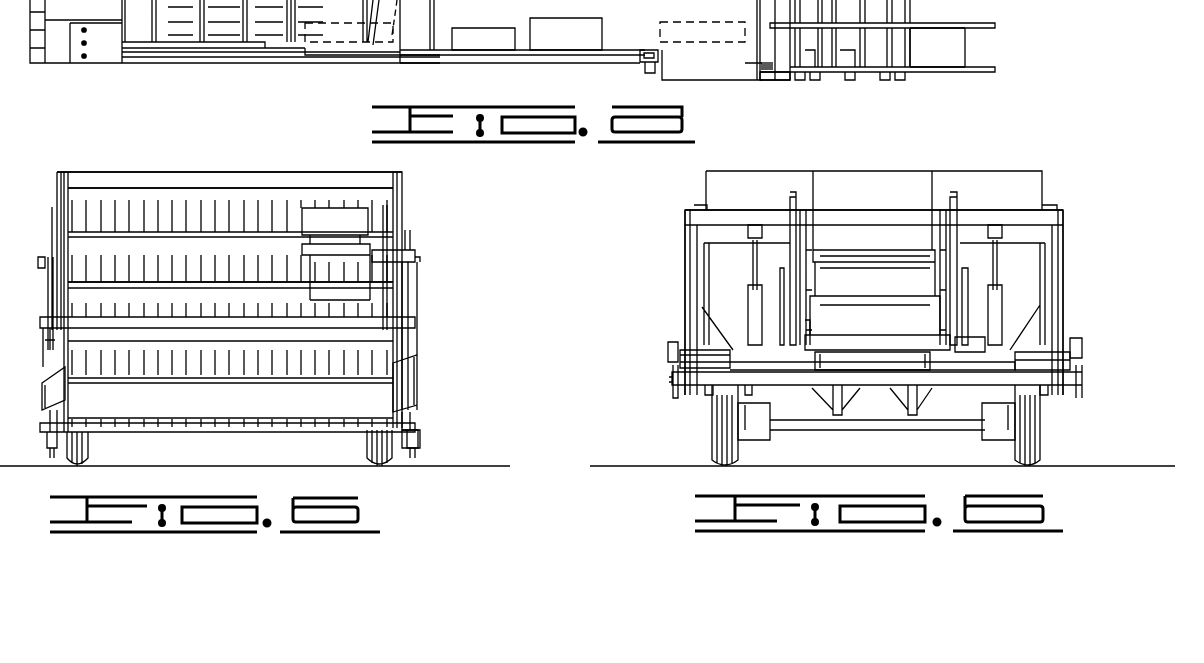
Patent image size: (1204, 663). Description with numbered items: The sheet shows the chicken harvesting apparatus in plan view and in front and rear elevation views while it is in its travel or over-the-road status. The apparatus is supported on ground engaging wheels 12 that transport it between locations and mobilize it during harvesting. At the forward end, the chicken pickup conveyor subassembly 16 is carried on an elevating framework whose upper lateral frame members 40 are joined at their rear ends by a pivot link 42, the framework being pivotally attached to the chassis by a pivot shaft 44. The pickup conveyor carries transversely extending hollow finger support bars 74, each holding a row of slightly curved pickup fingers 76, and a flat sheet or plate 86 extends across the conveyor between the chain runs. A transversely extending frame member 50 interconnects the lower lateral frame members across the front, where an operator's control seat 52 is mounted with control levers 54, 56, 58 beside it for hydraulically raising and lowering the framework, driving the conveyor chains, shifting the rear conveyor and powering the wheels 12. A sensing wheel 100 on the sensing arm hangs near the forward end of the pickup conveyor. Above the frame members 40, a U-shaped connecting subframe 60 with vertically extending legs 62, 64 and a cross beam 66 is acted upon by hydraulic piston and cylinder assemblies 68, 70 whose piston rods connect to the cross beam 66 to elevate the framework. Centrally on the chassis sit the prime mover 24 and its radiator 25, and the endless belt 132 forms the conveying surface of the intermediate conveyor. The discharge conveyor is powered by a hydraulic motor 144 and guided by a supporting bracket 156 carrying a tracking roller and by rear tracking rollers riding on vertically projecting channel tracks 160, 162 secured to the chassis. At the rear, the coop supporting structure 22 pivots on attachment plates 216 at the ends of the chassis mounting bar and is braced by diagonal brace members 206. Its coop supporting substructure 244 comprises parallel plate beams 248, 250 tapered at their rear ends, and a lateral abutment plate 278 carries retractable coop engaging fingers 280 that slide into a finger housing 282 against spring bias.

In FIG. 3, the ground engaging wheels 12 is at (700, 30).
In FIG. 5, the ground engaging wheels 12 is at (80, 450).
In FIG. 6, the ground engaging wheels 12 is at (725, 435).
In FIG. 5, the chicken pickup conveyor subassembly 16 is at (117, 183).
In FIG. 6, the coop supporting structure 22 is at (672, 382).
In FIG. 3, the prime mover 24 is at (580, 43).
In FIG. 3, the radiator 25 is at (492, 47).
In FIG. 3, the upper lateral frame member 40 is at (500, 60).
In FIG. 3, the pivot link 42 is at (658, 62).
In FIG. 3, the pivot shaft 44 is at (645, 73).
In FIG. 5, the transversely extending frame member 50 is at (405, 325).
In FIG. 5, the operator's control seat 52 is at (328, 215).
In FIG. 3, the control lever 54 is at (84, 30).
In FIG. 5, the control lever 54 is at (383, 232).
In FIG. 3, the control lever 56 is at (84, 43).
In FIG. 5, the control lever 56 is at (395, 233).
In FIG. 3, the control lever 58 is at (84, 56).
In FIG. 5, the control lever 58 is at (405, 230).
In FIG. 6, the U-shaped connecting subframe 60 is at (750, 208).
In FIG. 6, the vertically extending leg 62 is at (688, 240).
In FIG. 6, the vertically extending leg 64 is at (1063, 242).
In FIG. 6, the cross beam 66 is at (1033, 216).
In FIG. 6, the hydraulic piston and cylinder assembly 68 is at (752, 295).
In FIG. 6, the hydraulic piston and cylinder assembly 70 is at (997, 295).
In FIG. 5, the finger support bar 74 is at (118, 236).
In FIG. 5, the pickup finger 76 is at (68, 215).
In FIG. 5, the flat sheet or plate 86 is at (238, 251).
In FIG. 5, the sensing wheel 100 is at (415, 450).
In FIG. 6, the endless belt 132 is at (888, 236).
In FIG. 6, the hydraulic motor 144 is at (970, 345).
In FIG. 3, the supporting bracket 156 is at (550, 6).
In FIG. 6, the vertically projecting channel track 160 is at (793, 197).
In FIG. 6, the vertically projecting channel track 162 is at (954, 195).
In FIG. 6, the diagonal brace member 206 is at (836, 415).
In FIG. 3, the attachment plate 216 is at (800, 80).
In FIG. 3, the coop supporting substructure 244 is at (970, 78).
In FIG. 3, the plate beam 248 is at (985, 65).
In FIG. 3, the plate beam 250 is at (975, 25).
In FIG. 3, the lateral abutment plate 278 is at (775, 80).
In FIG. 6, the lateral abutment plate 278 is at (1075, 362).
In FIG. 3, the coop engaging finger 280 is at (760, 64).
In FIG. 6, the finger housing 282 is at (668, 345).